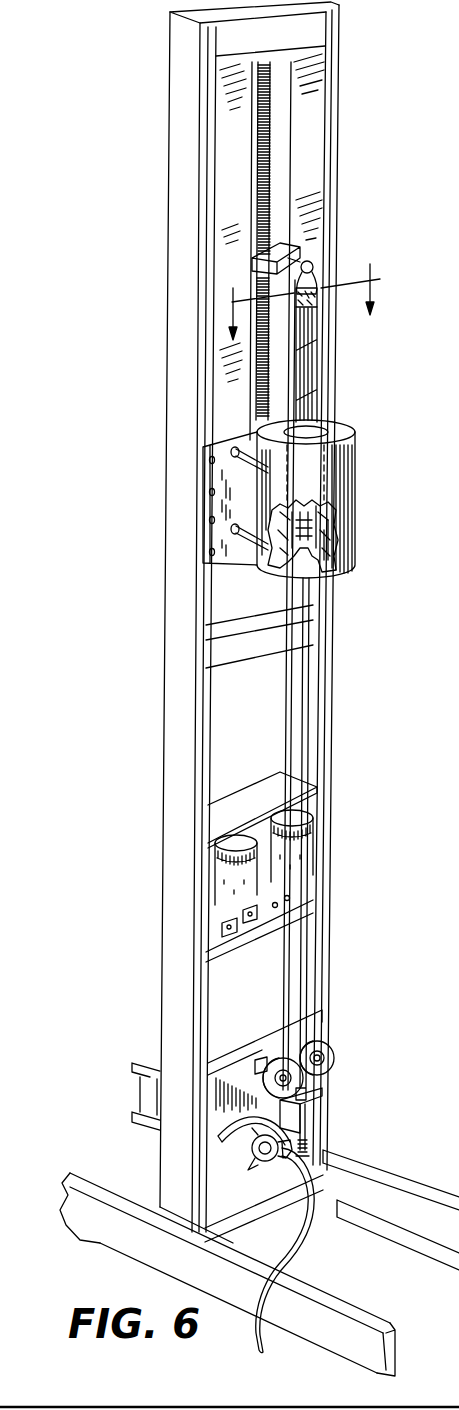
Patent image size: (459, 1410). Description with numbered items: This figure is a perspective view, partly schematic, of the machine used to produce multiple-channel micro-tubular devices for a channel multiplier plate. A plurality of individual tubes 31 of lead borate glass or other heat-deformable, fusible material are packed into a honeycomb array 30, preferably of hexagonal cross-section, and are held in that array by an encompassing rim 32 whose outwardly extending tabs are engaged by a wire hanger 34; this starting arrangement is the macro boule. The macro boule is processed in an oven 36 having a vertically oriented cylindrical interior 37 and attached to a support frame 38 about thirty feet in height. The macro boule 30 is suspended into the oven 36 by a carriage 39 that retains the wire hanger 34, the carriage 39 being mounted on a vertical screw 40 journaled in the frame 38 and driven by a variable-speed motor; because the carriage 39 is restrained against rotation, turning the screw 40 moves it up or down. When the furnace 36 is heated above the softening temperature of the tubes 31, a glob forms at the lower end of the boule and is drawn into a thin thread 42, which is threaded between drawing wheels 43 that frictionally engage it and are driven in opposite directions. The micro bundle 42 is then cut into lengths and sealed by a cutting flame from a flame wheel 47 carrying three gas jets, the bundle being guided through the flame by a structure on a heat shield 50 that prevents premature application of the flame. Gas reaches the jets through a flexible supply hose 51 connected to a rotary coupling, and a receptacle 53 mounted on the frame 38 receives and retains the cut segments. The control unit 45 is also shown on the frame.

The honeycomb array 30 is at (322, 392).
The individual tubes 31 is at (310, 362).
The encompassing rim 32 is at (317, 300).
The wire hanger 34 is at (318, 278).
The oven 36 is at (355, 518).
The cylindrical interior 37 is at (327, 570).
The support frame 38 is at (185, 505).
The carriage 39 is at (252, 262).
The vertical screw 40 is at (258, 187).
The thin thread 42 is at (303, 753).
The drawing wheels 43 is at (278, 1062).
The control unit 45 is at (310, 888).
The flame wheel 47 is at (272, 1183).
The heat shield 50 is at (252, 1153).
The flexible supply hose 51 is at (300, 1253).
The receptacle 53 is at (313, 1152).